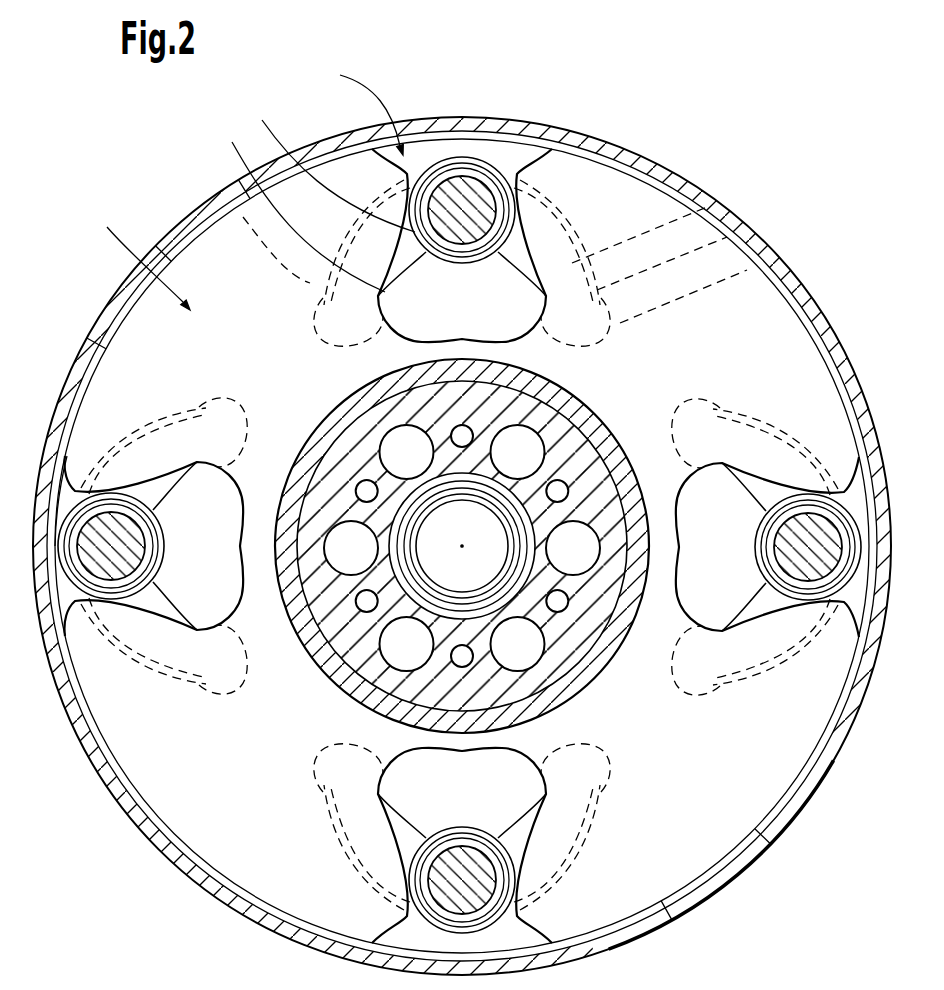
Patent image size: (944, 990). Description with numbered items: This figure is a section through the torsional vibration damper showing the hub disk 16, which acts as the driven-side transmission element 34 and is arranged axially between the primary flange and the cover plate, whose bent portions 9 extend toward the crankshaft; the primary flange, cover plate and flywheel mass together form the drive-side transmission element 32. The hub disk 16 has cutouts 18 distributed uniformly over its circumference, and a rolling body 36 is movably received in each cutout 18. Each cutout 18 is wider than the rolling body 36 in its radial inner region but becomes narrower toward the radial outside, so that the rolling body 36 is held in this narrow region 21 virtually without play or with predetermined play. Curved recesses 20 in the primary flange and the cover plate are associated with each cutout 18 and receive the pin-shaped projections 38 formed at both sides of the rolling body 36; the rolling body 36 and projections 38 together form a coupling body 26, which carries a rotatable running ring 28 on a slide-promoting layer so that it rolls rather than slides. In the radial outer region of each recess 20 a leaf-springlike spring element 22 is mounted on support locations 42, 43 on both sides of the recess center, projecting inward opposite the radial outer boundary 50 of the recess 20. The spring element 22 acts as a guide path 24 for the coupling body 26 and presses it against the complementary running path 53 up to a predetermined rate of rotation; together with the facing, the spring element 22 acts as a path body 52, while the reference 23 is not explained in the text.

The bent portions 9 is at (80, 357).
The hub disk 16 is at (230, 253).
The cutouts 18 is at (578, 243).
The recesses 20 is at (712, 182).
The narrow region 21 is at (430, 212).
The spring element 22 is at (560, 150).
The pad lobe 23 is at (548, 302).
The guide path 24 is at (590, 137).
The coupling body 26 is at (328, 160).
The running ring 28 is at (299, 202).
The drive-side transmission element 32 is at (356, 99).
The driven-side transmission element 34 is at (139, 253).
The rolling body 36 is at (330, 298).
The pin-shaped projections 38 is at (378, 335).
The support location 42 is at (232, 187).
The support location 43 is at (737, 220).
The radial outer boundary 50 is at (455, 160).
The path body 52 is at (590, 232).
The complementary running path 53 is at (737, 480).